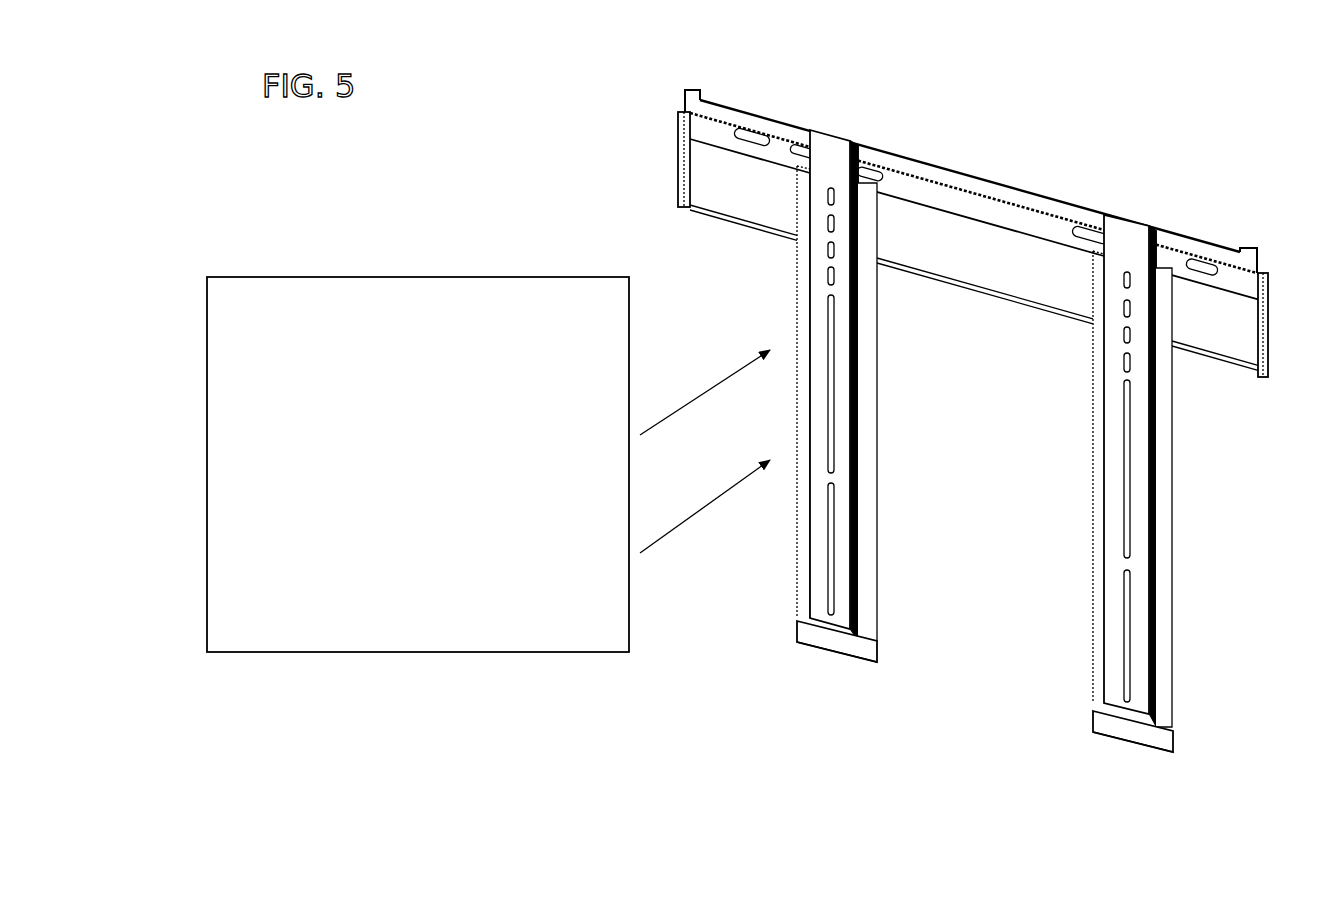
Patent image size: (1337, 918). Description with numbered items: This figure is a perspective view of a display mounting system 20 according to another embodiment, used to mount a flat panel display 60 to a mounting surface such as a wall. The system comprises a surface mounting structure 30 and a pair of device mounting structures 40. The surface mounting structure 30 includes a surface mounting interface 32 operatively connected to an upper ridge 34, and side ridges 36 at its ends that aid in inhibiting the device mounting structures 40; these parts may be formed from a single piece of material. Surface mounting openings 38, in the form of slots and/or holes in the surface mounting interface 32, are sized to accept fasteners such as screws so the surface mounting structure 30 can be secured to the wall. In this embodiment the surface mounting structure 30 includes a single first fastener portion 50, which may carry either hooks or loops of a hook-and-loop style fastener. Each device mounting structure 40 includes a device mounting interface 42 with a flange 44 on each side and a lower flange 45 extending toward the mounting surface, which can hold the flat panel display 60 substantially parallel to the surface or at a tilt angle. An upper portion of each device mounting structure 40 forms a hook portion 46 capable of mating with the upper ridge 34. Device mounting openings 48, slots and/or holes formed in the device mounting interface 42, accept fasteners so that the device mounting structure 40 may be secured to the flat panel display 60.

The mounting system 20 is at (468, 140).
The surface mounting structure 30 is at (703, 128).
The surface mounting interface 32 is at (720, 128).
The upper ridge 34 is at (777, 122).
The side ridge 36 is at (682, 160).
The surface mounting opening 38 is at (747, 137).
The device mounting structure 40 is at (815, 394).
The device mounting interface 42 is at (832, 630).
The flange 44 is at (797, 610).
The lower flange 45 is at (815, 641).
The hook portion 46 is at (838, 140).
The device mounting opening 48 is at (826, 196).
The first fastener portion 50 is at (1213, 327).
The flat panel display 60 is at (430, 471).